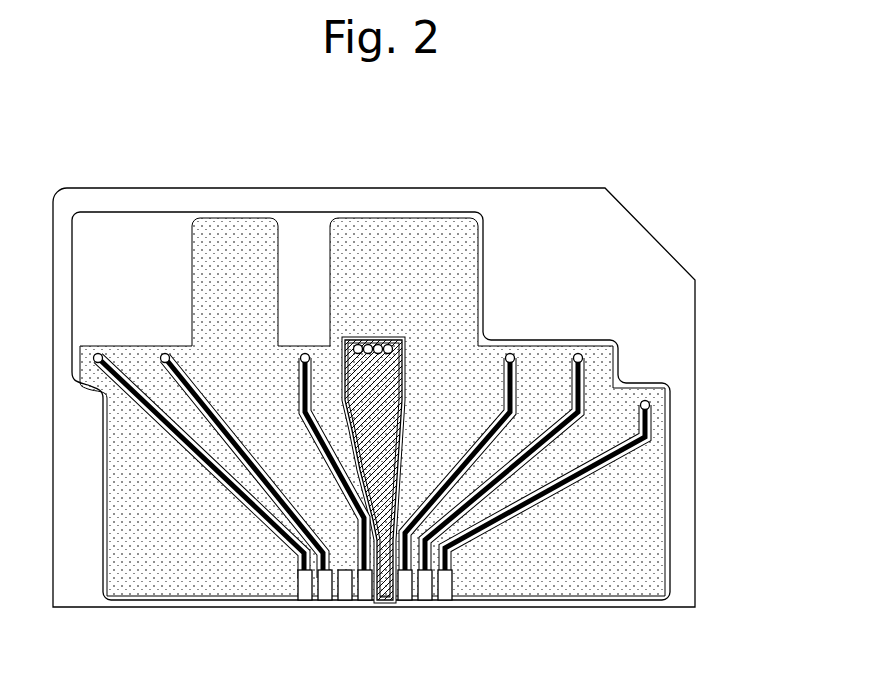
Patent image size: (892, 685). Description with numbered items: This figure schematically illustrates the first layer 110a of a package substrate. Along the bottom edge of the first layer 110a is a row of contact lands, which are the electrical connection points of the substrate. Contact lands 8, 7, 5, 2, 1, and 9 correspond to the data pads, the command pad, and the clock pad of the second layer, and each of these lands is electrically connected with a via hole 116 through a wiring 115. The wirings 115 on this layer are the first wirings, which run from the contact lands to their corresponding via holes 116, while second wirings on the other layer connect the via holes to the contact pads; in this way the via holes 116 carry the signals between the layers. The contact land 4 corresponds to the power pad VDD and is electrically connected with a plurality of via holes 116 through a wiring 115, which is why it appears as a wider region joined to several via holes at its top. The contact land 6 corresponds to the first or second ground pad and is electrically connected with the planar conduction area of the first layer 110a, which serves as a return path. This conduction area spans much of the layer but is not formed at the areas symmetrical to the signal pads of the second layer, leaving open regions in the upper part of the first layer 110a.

The first layer 110a is at (689, 154).
The wiring 115 is at (652, 430).
The via hole 116 is at (650, 405).
The contact land 1 is at (500, 494).
The contact land 2 is at (456, 494).
The contact land 4 is at (373, 487).
The contact land 5 is at (337, 494).
The contact land 6 is at (345, 602).
The contact land 7 is at (247, 494).
The contact land 8 is at (203, 494).
The contact land 9 is at (445, 602).